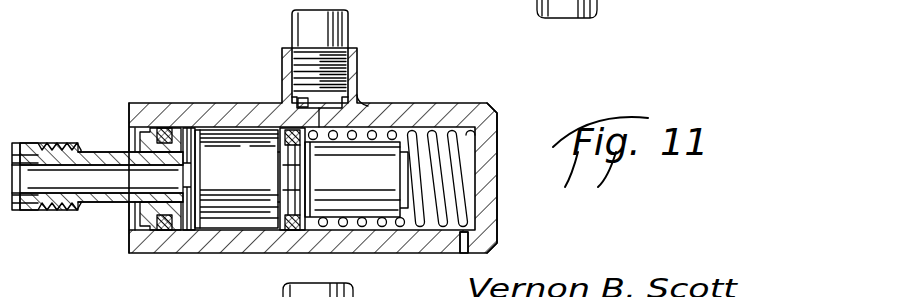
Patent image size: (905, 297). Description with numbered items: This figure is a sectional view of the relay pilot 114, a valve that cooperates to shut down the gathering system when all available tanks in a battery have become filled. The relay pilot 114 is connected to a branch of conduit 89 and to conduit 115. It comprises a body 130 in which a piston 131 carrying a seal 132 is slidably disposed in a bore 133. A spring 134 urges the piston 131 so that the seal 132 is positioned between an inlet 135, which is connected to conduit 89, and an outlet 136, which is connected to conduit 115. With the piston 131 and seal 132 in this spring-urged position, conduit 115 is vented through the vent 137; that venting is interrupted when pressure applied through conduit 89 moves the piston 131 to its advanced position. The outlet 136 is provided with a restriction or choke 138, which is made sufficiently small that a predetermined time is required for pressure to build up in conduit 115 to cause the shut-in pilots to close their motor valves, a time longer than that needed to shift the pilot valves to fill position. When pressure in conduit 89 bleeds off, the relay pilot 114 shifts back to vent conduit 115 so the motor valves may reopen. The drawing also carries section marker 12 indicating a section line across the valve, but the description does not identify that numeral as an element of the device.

The section line 12- 12 is at (184, 55).
The conduit 89 is at (25, 145).
The relay pilot 114 is at (455, 100).
The conduit 115 is at (292, 30).
The body 130 is at (490, 107).
The piston 131 is at (216, 143).
The seal 132 is at (268, 254).
The bore 133 is at (323, 232).
The spring 134 is at (399, 224).
The inlet 135 is at (97, 157).
The outlet 136 is at (286, 105).
The vent 137 is at (498, 234).
The choke 138 is at (363, 104).